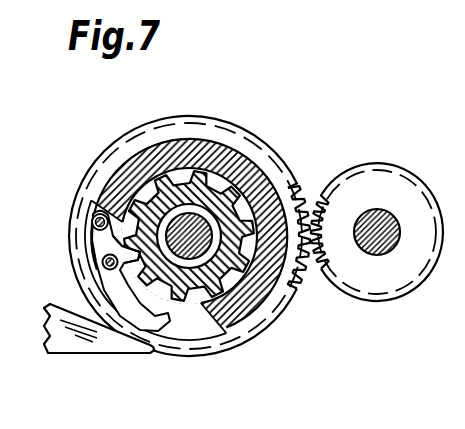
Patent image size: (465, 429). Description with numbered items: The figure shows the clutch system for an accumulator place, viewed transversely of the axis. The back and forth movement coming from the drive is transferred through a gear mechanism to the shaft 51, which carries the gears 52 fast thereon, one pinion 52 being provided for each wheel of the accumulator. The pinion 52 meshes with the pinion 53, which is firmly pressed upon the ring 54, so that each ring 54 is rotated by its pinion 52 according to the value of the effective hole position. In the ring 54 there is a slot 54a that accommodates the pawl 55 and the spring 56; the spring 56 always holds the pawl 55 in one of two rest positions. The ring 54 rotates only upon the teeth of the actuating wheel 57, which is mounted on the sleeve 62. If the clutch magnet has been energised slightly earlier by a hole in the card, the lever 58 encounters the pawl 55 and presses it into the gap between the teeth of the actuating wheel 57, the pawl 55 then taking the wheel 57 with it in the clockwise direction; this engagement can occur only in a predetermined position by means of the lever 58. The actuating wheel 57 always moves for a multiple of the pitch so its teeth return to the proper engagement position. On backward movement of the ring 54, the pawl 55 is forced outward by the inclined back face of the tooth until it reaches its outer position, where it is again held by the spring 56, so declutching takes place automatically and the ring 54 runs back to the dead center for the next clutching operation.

The shaft 51 is at (372, 225).
The pinion 52 is at (377, 232).
The pinion 53 is at (270, 308).
The ring 54 is at (197, 240).
The slot 54a is at (200, 320).
The pawl 55 is at (99, 224).
The spring 56 is at (95, 216).
The actuating wheel 57 is at (143, 188).
The lever 58 is at (80, 340).
The sleeve 62 is at (127, 210).